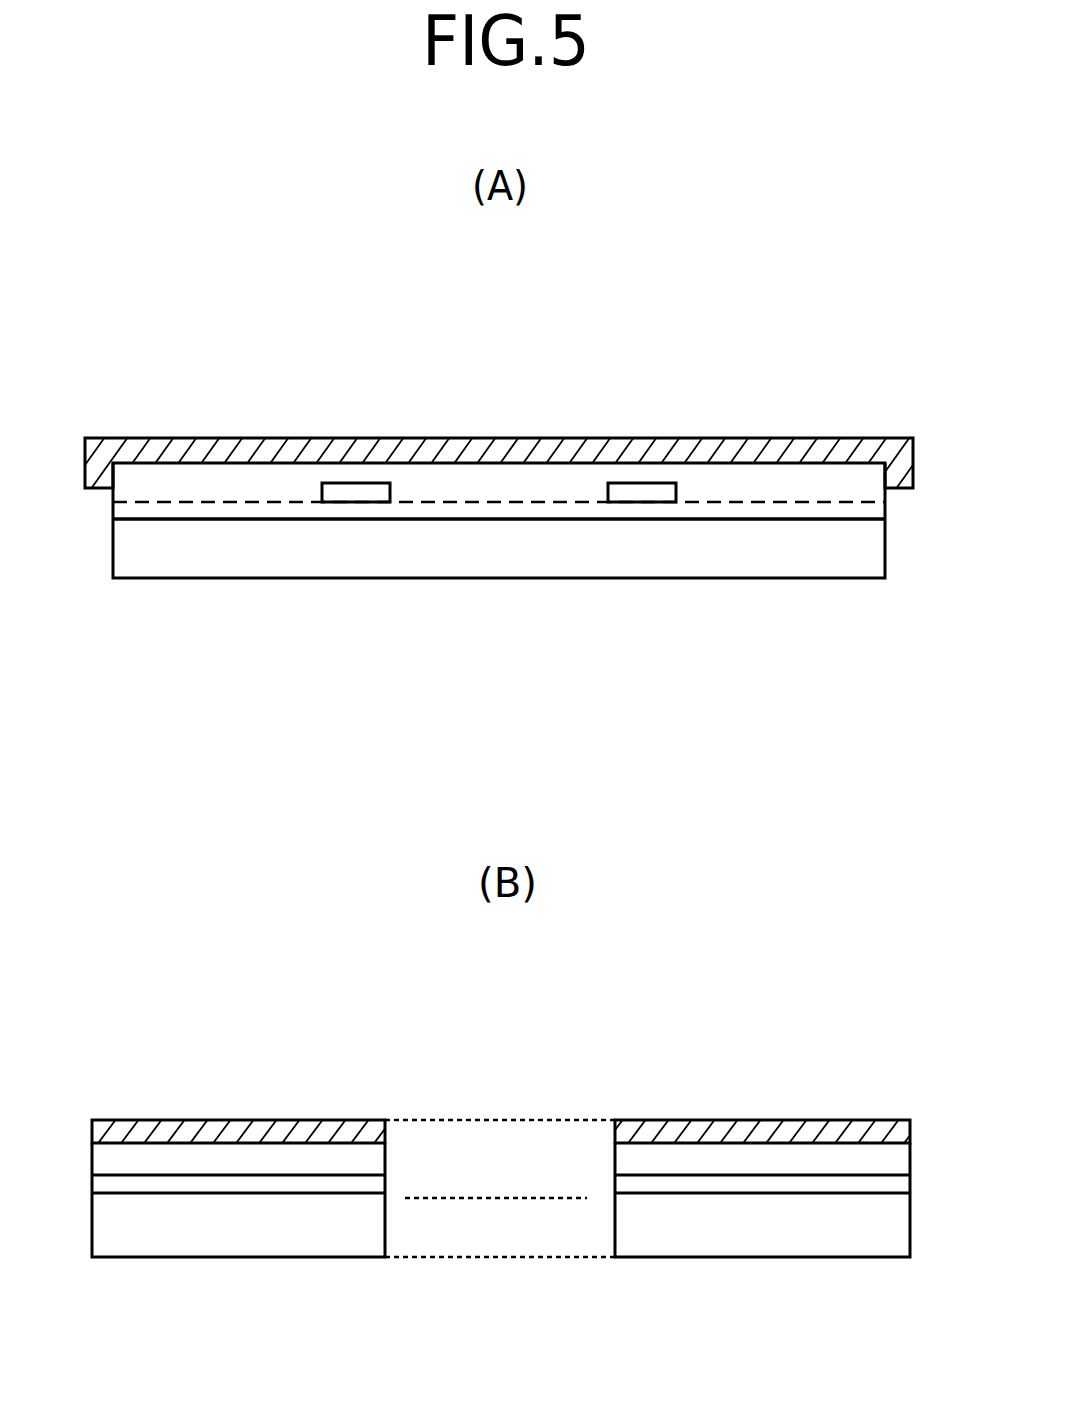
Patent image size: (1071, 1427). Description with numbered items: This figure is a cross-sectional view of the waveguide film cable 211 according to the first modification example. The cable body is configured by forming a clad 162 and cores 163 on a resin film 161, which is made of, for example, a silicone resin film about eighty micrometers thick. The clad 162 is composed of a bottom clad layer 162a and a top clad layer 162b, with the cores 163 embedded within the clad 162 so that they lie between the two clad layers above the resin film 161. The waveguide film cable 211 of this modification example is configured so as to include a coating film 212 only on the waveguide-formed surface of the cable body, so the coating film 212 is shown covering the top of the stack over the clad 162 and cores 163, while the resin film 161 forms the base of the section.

The waveguide film cable 211 is at (190, 312).
The coating film 212 is at (242, 437).
The resin film 161 is at (455, 553).
The clad 162 is at (501, 830).
The bottom clad layer 162a is at (708, 510).
The top clad layer 162b is at (848, 485).
The cores 163 is at (355, 483).